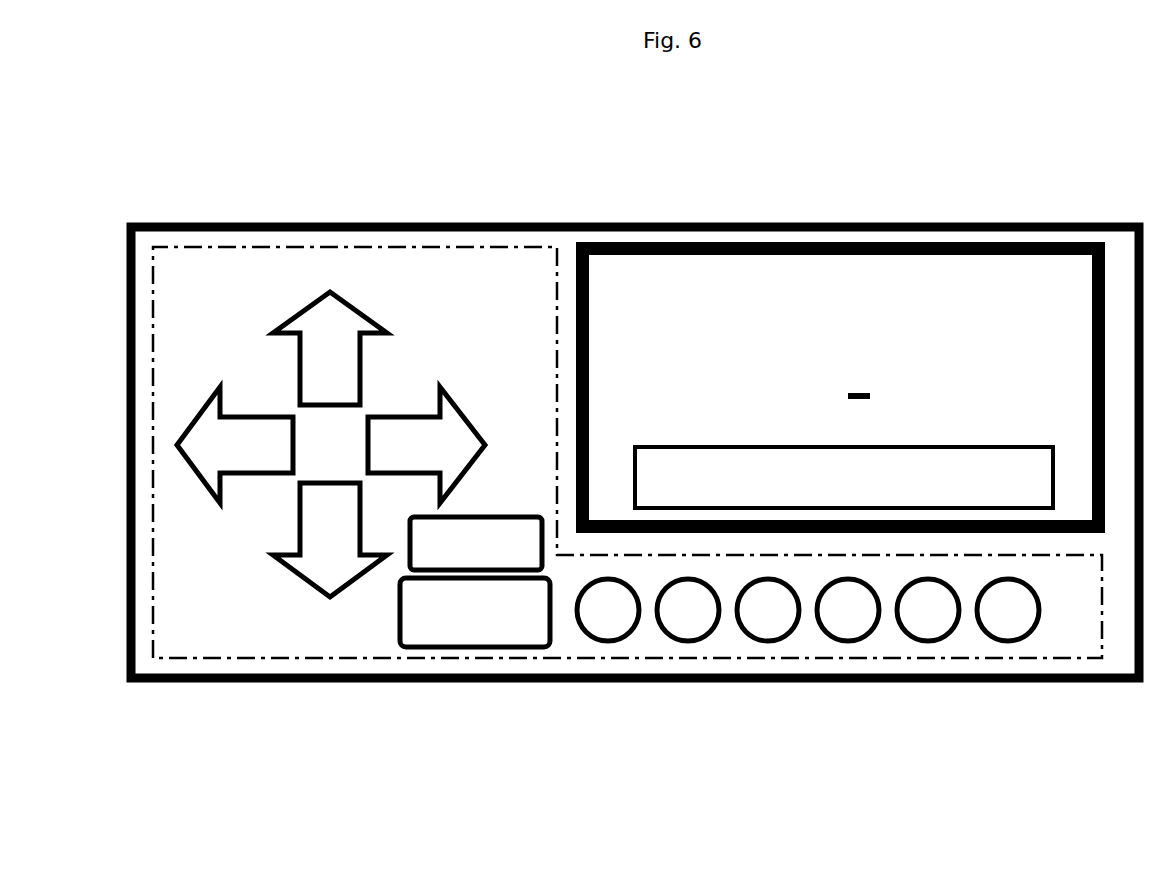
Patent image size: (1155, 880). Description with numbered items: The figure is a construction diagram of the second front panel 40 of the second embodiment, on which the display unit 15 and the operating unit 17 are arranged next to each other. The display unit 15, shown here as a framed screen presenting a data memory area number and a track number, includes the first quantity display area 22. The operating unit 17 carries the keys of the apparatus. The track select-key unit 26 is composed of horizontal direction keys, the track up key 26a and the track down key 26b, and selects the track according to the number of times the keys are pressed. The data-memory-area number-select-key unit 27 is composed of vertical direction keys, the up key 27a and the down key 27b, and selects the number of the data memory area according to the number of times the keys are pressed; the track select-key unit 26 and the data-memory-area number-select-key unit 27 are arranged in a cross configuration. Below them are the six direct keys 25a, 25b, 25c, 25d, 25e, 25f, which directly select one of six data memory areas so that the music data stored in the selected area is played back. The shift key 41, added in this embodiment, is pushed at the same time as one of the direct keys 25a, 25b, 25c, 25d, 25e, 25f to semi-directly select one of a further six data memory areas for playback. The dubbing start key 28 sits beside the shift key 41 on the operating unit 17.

The second front panel 40 is at (547, 223).
The display unit 15 is at (899, 240).
The operating unit 17 is at (303, 658).
The first quantity display area 22 is at (1040, 447).
The direct key 25a is at (608, 641).
The direct key 25b is at (688, 641).
The direct key 25c is at (768, 641).
The direct key 25d is at (848, 641).
The direct key 25e is at (928, 641).
The direct key 25f is at (1008, 641).
The track select-key unit 26 is at (361, 377).
The track up key 26a is at (295, 445).
The track down key 26b is at (448, 387).
The data-memory-area number-select-key unit 27 is at (274, 424).
The up key 27a is at (293, 322).
The down key 27b is at (312, 483).
The dubbing start key 28 is at (497, 643).
The shift key 41 is at (482, 517).